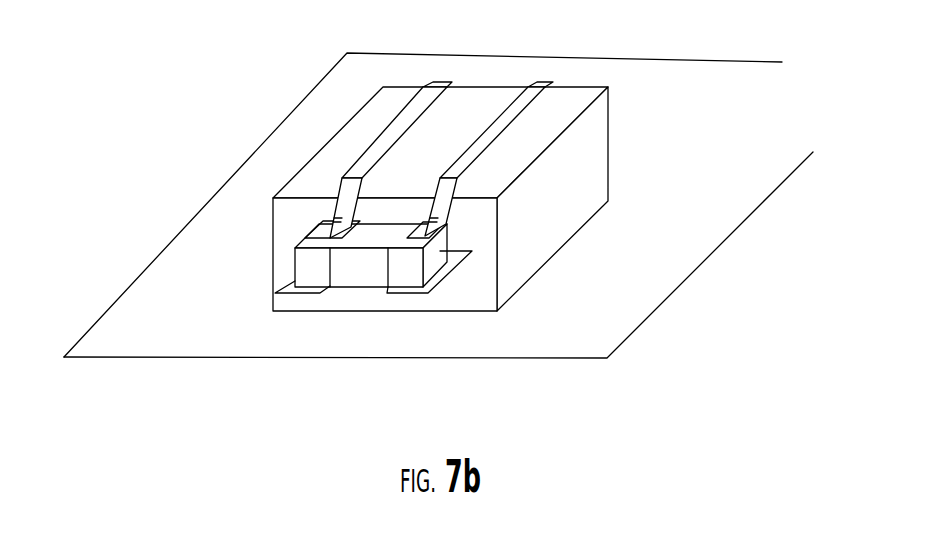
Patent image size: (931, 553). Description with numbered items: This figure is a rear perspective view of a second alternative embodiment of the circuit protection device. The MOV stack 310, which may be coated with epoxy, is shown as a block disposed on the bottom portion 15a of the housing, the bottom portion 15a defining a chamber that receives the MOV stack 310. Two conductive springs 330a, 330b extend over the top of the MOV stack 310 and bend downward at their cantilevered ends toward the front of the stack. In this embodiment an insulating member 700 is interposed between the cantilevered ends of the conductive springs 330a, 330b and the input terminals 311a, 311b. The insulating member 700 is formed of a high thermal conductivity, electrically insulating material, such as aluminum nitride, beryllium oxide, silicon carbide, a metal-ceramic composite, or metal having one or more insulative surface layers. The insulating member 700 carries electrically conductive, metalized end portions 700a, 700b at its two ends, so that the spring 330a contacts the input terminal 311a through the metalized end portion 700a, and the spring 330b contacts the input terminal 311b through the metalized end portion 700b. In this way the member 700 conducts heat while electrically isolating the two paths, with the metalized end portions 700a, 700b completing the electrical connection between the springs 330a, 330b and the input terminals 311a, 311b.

The bottom portion 15a is at (227, 205).
The MOV stack 310 is at (580, 182).
The conductive spring 330a is at (420, 100).
The conductive spring 330b is at (533, 82).
The insulating member 700 is at (362, 270).
The metalized end portion 700a is at (298, 263).
The metalized end portion 700b is at (433, 252).
The input terminal 311a is at (288, 297).
The input terminal 311b is at (422, 288).